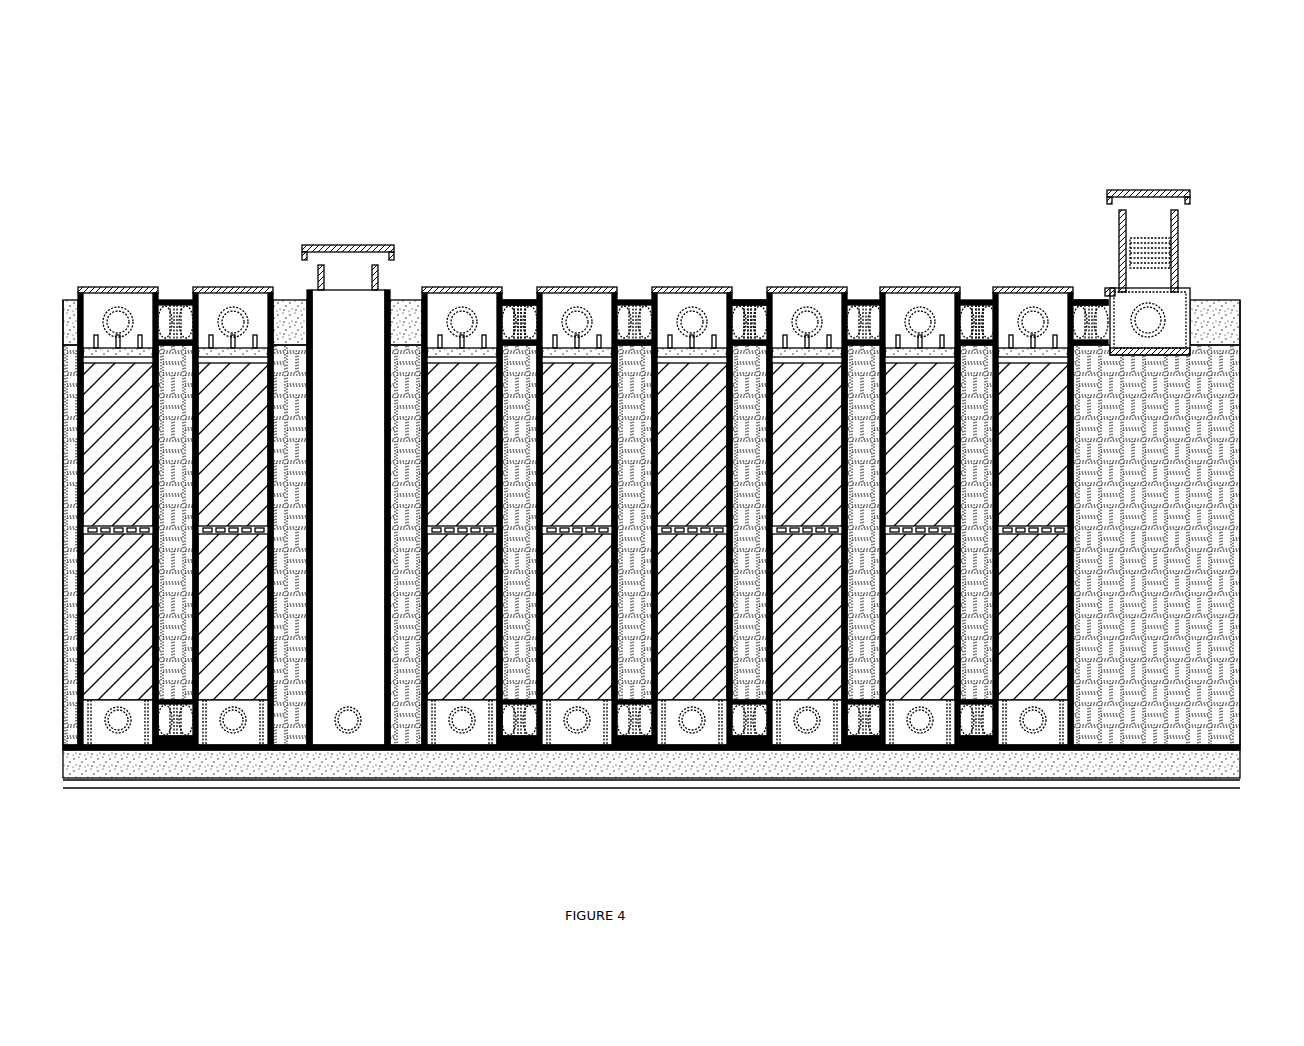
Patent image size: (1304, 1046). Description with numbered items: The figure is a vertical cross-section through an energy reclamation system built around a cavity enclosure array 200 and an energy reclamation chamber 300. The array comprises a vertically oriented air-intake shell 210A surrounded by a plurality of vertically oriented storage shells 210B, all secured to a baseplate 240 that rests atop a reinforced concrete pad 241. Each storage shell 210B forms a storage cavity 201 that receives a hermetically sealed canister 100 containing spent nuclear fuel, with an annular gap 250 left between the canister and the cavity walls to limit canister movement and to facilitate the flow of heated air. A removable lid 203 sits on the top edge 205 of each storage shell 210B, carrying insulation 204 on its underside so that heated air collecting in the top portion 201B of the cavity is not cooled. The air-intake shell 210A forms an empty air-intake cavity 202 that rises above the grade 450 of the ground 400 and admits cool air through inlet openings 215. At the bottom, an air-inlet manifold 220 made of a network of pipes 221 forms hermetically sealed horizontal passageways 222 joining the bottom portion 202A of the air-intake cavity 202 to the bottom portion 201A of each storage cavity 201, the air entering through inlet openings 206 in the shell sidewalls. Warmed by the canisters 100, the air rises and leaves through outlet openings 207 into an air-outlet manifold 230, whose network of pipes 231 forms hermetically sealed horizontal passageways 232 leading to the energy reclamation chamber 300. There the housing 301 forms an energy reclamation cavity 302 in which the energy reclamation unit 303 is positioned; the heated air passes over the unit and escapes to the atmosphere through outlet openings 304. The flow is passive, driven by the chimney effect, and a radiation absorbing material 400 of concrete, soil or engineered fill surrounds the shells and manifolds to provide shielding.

The canister 100 is at (1276, 90).
The cavity enclosure array 200 is at (575, 499).
The storage cavity 201 is at (75, 712).
The bottom portion of storage cavity 201A is at (80, 762).
The top portion of storage cavity 201B is at (477, 298).
The air-intake cavity 202 is at (348, 517).
The bottom portion of air-intake cavity 202A is at (355, 735).
The removable lid 203 is at (1030, 287).
The insulation 204 is at (460, 286).
The top edge 205 is at (728, 325).
The inlet opening 206 is at (325, 745).
The outlet opening 207 is at (633, 287).
The air-intake shell 210A is at (294, 335).
The storage shell 210B is at (70, 572).
The inlet opening 215 is at (310, 272).
The air-inlet manifold 220 is at (63, 746).
The pipe 221 is at (155, 745).
The hermetically sealed horizontal passageway 222 is at (170, 745).
The air-outlet manifold 230 is at (77, 322).
The pipe 231 is at (498, 302).
The hermetically sealed horizontal passageway 232 is at (510, 320).
The baseplate 240 is at (1190, 757).
The reinforced concrete pad 241 is at (1110, 757).
The annular gap 250 is at (1238, 577).
The energy reclamation chamber 300 is at (1189, 266).
The housing 301 is at (1178, 268).
The energy reclamation cavity 302 is at (1152, 202).
The energy reclamation unit 303 is at (1175, 245).
The outlet opening 304 is at (1176, 203).
The radiation absorbing material 400 is at (1160, 407).
The grade 450 is at (967, 296).